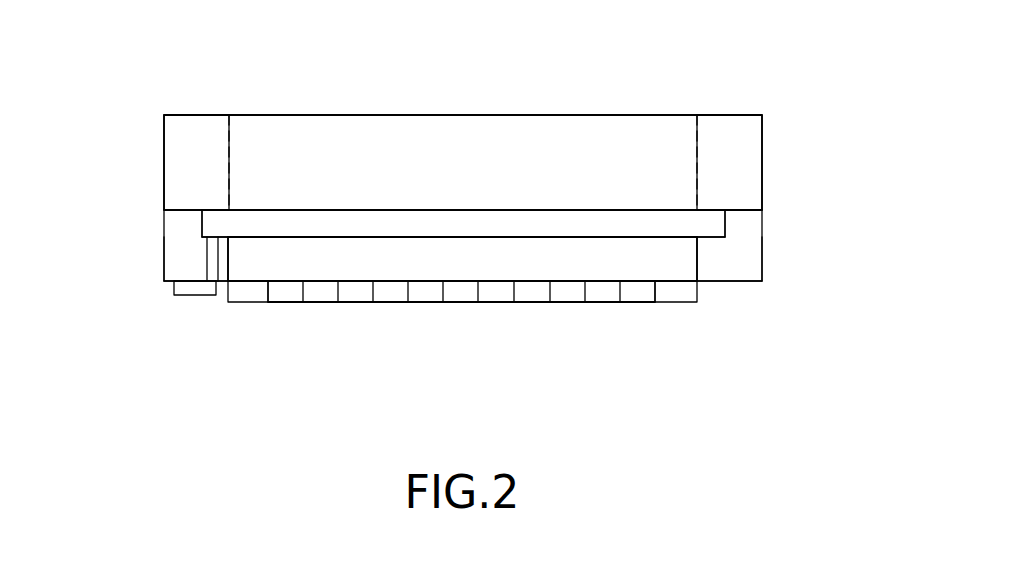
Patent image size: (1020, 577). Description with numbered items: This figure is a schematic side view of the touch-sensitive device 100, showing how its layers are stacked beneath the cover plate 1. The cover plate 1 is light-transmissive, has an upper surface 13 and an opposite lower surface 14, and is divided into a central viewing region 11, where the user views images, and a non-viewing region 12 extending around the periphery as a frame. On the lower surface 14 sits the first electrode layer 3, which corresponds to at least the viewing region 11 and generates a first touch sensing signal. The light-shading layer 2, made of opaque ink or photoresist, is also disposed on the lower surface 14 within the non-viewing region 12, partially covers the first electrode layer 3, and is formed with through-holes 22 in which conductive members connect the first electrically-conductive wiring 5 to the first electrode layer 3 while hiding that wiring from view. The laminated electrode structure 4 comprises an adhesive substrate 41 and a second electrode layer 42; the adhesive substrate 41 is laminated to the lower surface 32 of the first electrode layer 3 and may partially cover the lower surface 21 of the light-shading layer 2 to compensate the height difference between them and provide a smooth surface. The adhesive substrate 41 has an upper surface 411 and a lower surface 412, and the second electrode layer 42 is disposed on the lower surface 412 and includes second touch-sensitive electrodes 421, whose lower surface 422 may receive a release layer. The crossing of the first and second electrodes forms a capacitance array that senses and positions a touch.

The touch-sensitive device 100 is at (137, 33).
The cover plate 1 is at (653, 53).
The viewing region 11 is at (652, 138).
The non-viewing region 12 is at (190, 137).
The upper surface 13 is at (443, 113).
The lower surface 14 is at (742, 210).
The light-shading layer 2 is at (173, 258).
The lower surface of the light-shading layer 21 is at (167, 283).
The through-holes 22 is at (205, 243).
The first electrode layer 3 is at (350, 228).
The lower surface of the first electrode layer 32 is at (276, 237).
The laminated electrode structure 4 is at (697, 411).
The adhesive substrate 41 is at (663, 272).
The upper surface of the adhesive substrate 411 is at (530, 237).
The lower surface of the adhesive substrate 412 is at (262, 281).
The second electrode layer 42 is at (295, 361).
The second touch-sensitive electrodes 421 is at (357, 296).
The lower surface of the second electrode layer 422 is at (278, 302).
The first electrically-conductive wiring 5 is at (188, 291).